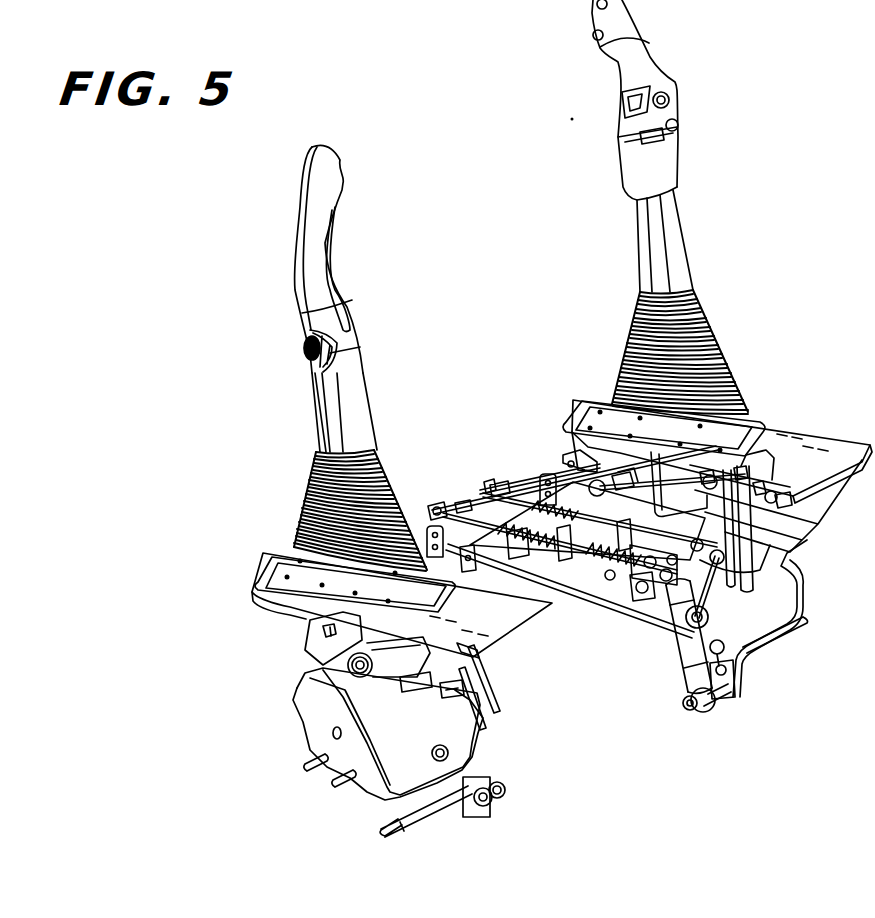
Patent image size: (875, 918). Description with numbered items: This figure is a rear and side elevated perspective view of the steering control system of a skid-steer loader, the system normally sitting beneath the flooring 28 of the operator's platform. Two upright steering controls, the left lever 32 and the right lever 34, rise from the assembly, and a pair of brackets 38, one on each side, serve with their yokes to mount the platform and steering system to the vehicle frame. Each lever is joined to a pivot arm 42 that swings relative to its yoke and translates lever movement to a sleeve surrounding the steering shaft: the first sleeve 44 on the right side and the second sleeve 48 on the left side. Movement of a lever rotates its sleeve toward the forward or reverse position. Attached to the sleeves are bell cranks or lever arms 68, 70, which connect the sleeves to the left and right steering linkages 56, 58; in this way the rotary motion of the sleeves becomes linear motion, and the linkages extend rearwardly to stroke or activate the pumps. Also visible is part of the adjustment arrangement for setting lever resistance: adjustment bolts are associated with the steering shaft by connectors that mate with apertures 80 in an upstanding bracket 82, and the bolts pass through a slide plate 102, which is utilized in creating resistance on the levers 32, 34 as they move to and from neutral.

The flooring 28 is at (312, 602).
The left lever 32 is at (330, 397).
The right lever 34 is at (689, 238).
The bracket 38 is at (303, 702).
The pivot arm 42 is at (487, 699).
The first sleeve 44 is at (573, 493).
The second sleeve 48 is at (467, 566).
The left steering linkage 56 is at (633, 607).
The right steering linkage 58 is at (687, 578).
The bell crank or lever arm 68 is at (430, 527).
The bell crank or lever arm 70 is at (547, 473).
The apertures 80 is at (437, 505).
The upstanding bracket 82 is at (493, 477).
The slide plate 102 is at (636, 585).